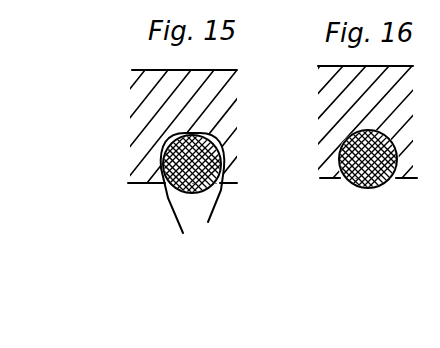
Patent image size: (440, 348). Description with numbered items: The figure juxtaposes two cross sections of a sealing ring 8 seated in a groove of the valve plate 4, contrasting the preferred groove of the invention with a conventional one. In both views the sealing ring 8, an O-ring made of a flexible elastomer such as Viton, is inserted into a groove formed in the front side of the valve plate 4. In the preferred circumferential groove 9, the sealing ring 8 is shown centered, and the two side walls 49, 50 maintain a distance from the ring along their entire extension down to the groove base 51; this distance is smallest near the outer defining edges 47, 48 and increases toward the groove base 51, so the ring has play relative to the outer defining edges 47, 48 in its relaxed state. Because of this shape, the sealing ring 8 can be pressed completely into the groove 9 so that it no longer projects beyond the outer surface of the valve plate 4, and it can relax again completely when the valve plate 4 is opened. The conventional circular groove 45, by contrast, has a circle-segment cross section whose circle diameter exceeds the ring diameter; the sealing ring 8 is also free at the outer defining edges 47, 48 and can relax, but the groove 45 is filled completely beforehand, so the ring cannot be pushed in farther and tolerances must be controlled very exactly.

In FIG. 15, the valve plate 4 is at (138, 160).
In FIG. 15, the sealing ring 8 is at (193, 184).
In FIG. 16, the sealing ring 8 is at (366, 188).
In FIG. 15, the circumferential groove 9 is at (170, 150).
In FIG. 16, the conventional circular groove 45 is at (325, 178).
In FIG. 15, the outer defining edge 47 is at (171, 252).
In FIG. 16, the outer defining edge 47 is at (340, 185).
In FIG. 15, the outer defining edge 48 is at (210, 254).
In FIG. 16, the outer defining edge 48 is at (393, 182).
In FIG. 15, the side wall 49 is at (160, 183).
In FIG. 15, the side wall 50 is at (223, 167).
In FIG. 15, the groove base 51 is at (178, 135).